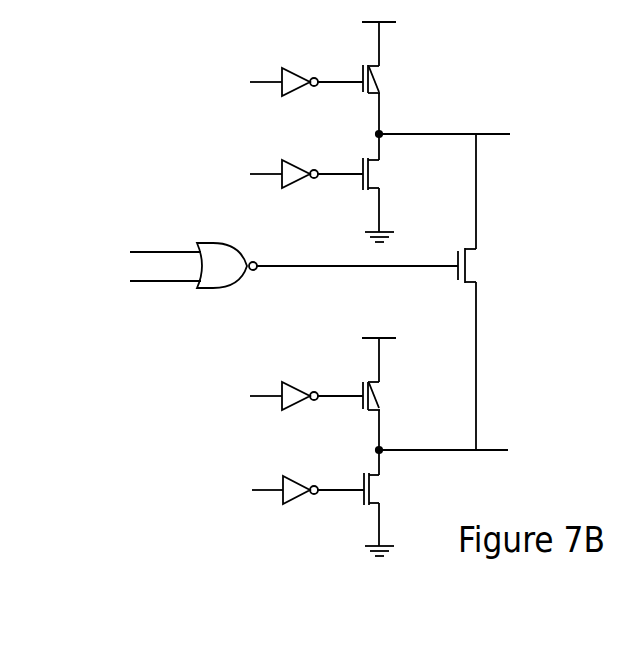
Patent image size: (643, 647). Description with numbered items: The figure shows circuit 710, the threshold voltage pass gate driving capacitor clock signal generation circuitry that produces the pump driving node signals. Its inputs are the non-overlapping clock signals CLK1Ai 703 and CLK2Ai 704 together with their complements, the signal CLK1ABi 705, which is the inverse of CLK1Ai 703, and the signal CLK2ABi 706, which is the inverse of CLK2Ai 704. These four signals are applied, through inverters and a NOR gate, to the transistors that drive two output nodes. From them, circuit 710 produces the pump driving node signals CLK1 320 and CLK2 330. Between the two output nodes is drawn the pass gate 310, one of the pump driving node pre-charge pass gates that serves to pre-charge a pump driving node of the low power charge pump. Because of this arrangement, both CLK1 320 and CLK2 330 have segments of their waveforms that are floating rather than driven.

The circuit 710 is at (67, 124).
The clock signal CLK1Ai 703 is at (204, 70).
The clock signal CLK2Ai 704 is at (86, 297).
The signal CLK1ABi 705 is at (166, 500).
The signal CLK2ABi 706 is at (190, 162).
The pass gate 310 is at (486, 260).
The pump driving node signal CLK1 320 is at (544, 150).
The pump driving node signal CLK2 330 is at (545, 440).